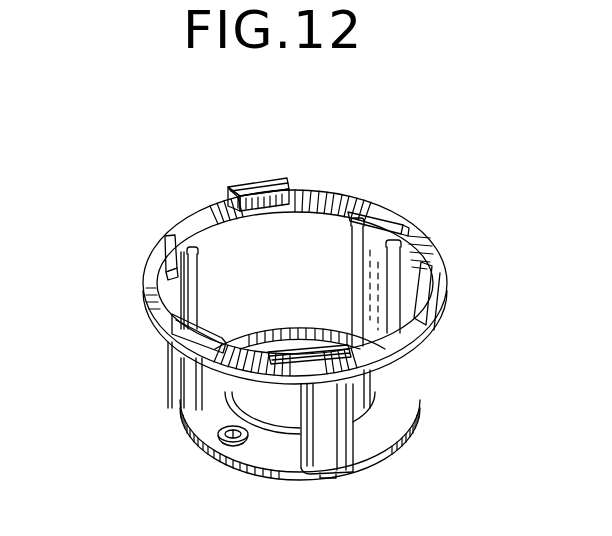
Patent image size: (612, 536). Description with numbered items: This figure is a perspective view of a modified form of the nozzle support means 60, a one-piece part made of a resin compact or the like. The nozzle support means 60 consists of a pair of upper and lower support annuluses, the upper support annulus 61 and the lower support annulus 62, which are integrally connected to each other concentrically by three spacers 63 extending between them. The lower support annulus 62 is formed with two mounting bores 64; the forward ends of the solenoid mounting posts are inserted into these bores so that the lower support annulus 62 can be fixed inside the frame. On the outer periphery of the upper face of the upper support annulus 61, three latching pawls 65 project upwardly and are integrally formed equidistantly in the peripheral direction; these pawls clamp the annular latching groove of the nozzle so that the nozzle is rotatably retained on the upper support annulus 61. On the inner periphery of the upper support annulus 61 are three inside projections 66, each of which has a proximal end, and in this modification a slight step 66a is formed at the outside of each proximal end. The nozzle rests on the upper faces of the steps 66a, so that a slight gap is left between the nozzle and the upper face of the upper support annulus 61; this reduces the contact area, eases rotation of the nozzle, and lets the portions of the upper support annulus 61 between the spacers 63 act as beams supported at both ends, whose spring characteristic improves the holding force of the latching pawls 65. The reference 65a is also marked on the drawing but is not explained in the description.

The nozzle support means 60 is at (426, 182).
The upper support annulus 61 is at (330, 196).
The lower support annulus 62 is at (410, 427).
The spacers 63 is at (368, 275).
The mounting bores 64 is at (232, 446).
The latching pawls 65 is at (268, 178).
The end face of tab 65a is at (238, 183).
The inside projections 66 is at (368, 228).
The step 66a is at (404, 227).